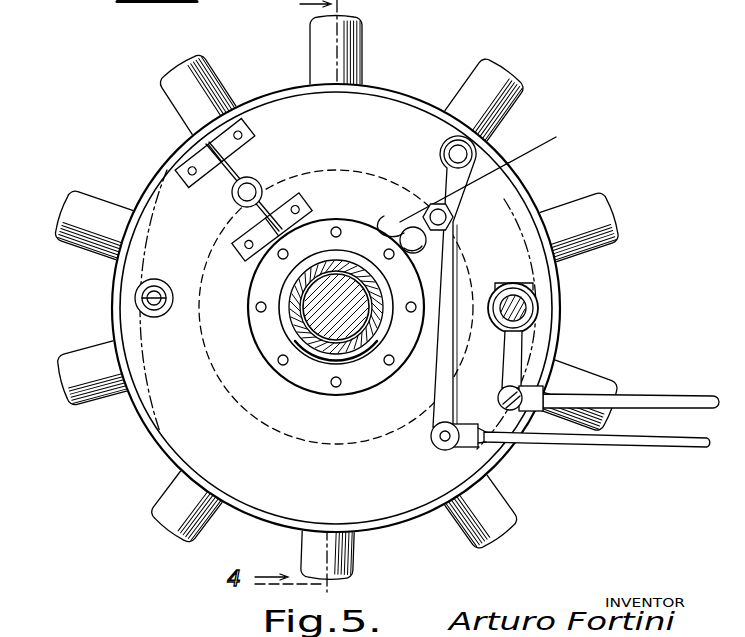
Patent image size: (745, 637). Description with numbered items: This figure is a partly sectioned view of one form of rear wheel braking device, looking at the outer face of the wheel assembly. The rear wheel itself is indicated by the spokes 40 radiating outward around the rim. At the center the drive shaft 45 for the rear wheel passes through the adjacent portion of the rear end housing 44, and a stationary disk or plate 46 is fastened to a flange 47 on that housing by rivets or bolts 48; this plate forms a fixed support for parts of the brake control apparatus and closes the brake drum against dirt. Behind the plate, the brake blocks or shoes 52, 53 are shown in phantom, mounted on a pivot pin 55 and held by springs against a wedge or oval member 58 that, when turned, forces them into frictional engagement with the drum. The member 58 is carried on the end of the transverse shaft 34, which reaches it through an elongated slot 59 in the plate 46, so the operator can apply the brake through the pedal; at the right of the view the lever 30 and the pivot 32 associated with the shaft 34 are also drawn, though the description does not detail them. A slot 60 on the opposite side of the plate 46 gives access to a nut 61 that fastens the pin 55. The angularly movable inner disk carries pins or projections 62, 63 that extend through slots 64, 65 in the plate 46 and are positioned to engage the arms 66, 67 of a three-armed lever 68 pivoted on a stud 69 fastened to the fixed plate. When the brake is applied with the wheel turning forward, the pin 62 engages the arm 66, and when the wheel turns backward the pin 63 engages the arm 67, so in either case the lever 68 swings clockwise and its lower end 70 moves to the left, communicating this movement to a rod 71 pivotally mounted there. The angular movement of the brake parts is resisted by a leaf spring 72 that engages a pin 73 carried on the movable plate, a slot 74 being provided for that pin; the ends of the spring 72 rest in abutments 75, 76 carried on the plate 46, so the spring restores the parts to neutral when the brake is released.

The operating lever 30 is at (660, 395).
The pivot pin 32 is at (498, 396).
The shaft 34 is at (535, 310).
The spokes 40 is at (167, 97).
The rear end housing 44 is at (311, 307).
The drive shaft 45 is at (315, 323).
The disk or plate 46 is at (336, 308).
The flange 47 is at (267, 350).
The rivets or bolts 48 is at (255, 308).
The brake block or shoe 52 is at (487, 192).
The brake block or shoe 53 is at (135, 339).
The pivot pin 55 is at (123, 308).
The wedge or oval member 58 is at (493, 313).
The slot 59 is at (507, 345).
The slot 60 is at (154, 280).
The nut 61 is at (157, 322).
The pin or projection 62 is at (445, 158).
The pin or projection 63 is at (414, 254).
The slot 64 is at (446, 144).
The slot 65 is at (378, 225).
The arm 66 is at (490, 172).
The arm 67 is at (402, 233).
The three-armed lever 68 is at (443, 240).
The stud 69 is at (437, 212).
The lower end 70 is at (432, 440).
The rod 71 is at (634, 447).
The leaf spring 72 is at (263, 208).
The pin 73 is at (233, 196).
The slot 74 is at (233, 203).
The abutment 75 is at (293, 208).
The abutment 76 is at (250, 128).